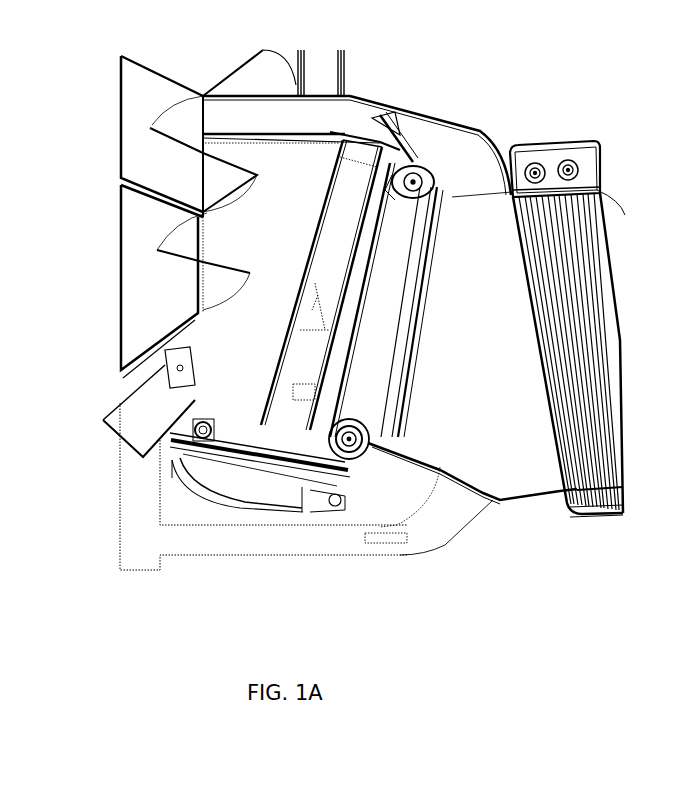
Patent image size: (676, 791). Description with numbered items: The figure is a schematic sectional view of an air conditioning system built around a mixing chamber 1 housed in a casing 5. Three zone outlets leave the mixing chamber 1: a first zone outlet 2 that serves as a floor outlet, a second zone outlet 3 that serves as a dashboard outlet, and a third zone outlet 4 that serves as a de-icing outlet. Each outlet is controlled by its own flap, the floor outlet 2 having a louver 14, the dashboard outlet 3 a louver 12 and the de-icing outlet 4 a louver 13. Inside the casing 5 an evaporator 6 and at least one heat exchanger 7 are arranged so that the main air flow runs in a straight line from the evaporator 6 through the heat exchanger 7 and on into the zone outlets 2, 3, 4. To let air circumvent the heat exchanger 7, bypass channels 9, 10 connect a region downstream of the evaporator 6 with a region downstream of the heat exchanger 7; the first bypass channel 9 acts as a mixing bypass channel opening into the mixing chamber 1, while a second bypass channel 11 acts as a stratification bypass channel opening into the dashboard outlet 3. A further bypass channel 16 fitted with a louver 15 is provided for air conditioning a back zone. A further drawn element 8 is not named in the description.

The mixing chamber 1 is at (319, 285).
The first zone outlet 2 is at (140, 427).
The second zone outlet 3 is at (150, 168).
The third zone outlet 4 is at (320, 70).
The casing 5 is at (552, 495).
The evaporator 6 is at (597, 177).
The heat exchanger 7 is at (385, 330).
The top rail 8 is at (407, 143).
The first bypass channel 9 is at (453, 153).
The bypass channel 10 is at (293, 127).
The second bypass channel 11 is at (227, 110).
The louver 12 is at (160, 130).
The louver 13 is at (300, 83).
The louver 14 is at (167, 387).
The louver 15 is at (390, 543).
The further bypass channel 16 is at (270, 547).